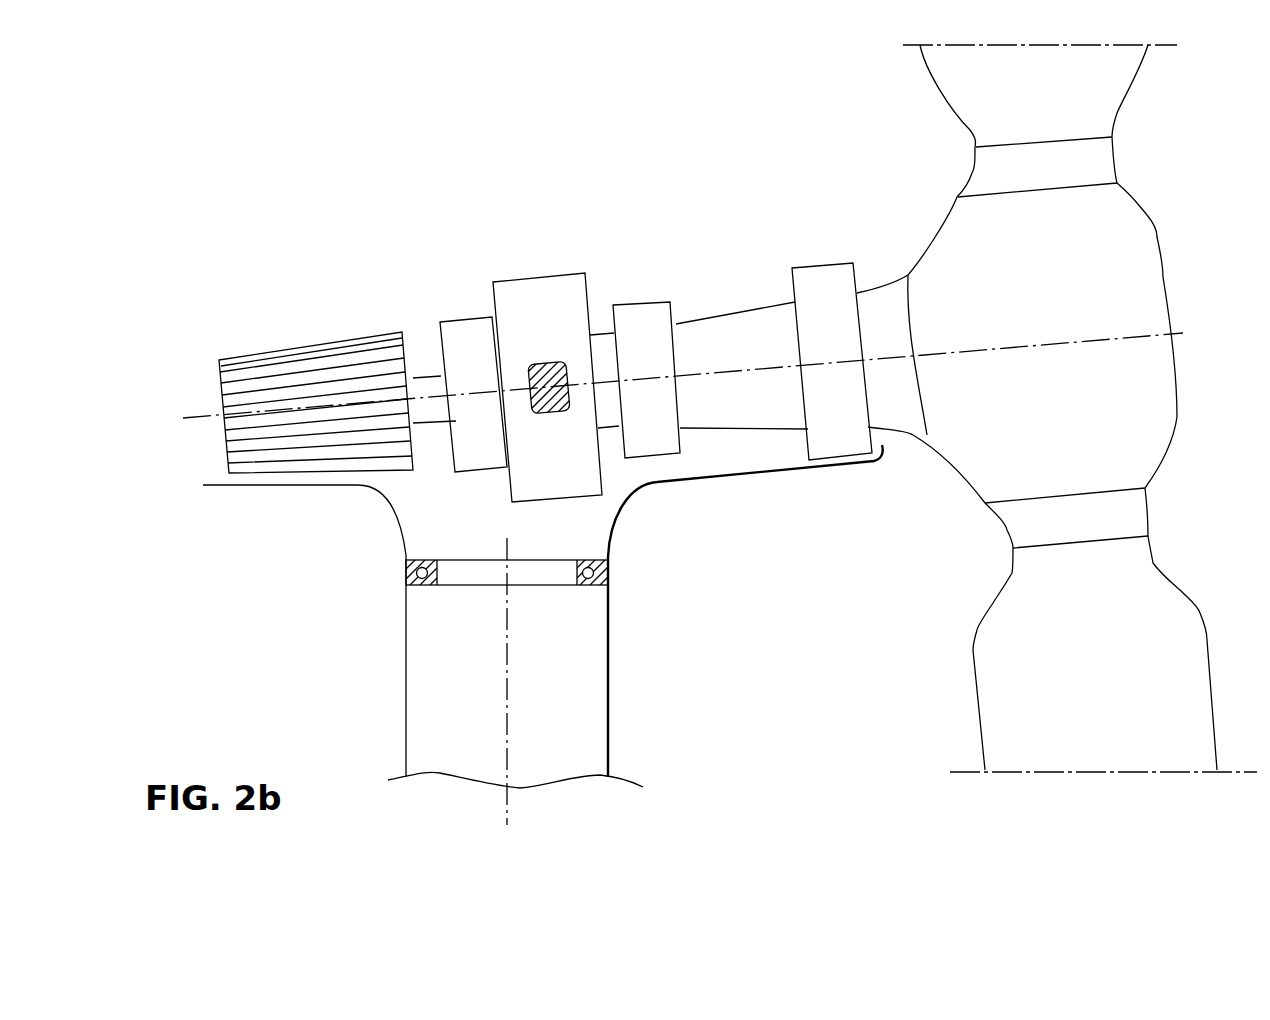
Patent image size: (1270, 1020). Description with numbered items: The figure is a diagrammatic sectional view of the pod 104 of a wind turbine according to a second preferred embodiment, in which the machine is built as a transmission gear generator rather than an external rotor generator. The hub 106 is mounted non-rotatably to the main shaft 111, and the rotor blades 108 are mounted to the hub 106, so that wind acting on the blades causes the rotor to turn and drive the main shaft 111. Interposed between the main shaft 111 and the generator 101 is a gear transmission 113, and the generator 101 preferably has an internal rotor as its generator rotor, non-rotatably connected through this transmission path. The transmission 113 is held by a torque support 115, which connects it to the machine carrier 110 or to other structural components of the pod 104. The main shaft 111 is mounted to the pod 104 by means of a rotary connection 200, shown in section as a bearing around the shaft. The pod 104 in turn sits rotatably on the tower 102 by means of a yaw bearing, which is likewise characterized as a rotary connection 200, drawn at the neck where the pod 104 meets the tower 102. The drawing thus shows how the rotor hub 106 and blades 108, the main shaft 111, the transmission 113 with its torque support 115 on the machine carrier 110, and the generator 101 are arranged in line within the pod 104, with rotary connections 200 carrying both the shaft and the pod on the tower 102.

The generator 101 is at (298, 340).
The tower 102 is at (567, 713).
The pod 104 is at (634, 503).
The hub 106 is at (975, 457).
The rotor blades 108 is at (970, 83).
The machine carrier 110 is at (398, 478).
The main shaft 111 is at (716, 312).
The gear transmission 113 is at (541, 266).
The torque support 115 is at (547, 357).
The rotary connection 200 is at (819, 262).